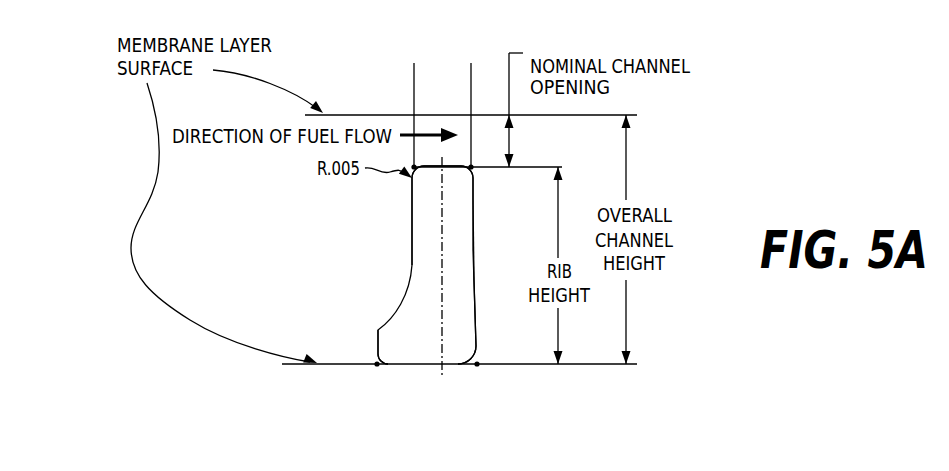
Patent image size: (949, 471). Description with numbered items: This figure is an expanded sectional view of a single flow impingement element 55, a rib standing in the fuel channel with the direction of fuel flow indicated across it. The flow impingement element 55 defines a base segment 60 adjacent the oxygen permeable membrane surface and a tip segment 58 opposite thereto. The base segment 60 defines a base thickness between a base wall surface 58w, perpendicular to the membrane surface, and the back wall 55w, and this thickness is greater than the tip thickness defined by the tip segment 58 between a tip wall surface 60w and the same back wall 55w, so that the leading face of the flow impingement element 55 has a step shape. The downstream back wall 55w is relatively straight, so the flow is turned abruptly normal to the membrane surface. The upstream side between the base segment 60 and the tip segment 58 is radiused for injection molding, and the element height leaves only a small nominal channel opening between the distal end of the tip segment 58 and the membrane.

The flow impingement element 55 is at (453, 303).
The tip segment 58 is at (453, 222).
The base wall surface 58w is at (412, 231).
The back wall 55w is at (475, 257).
The base segment 60 is at (467, 327).
The tip wall surface 60w is at (378, 340).